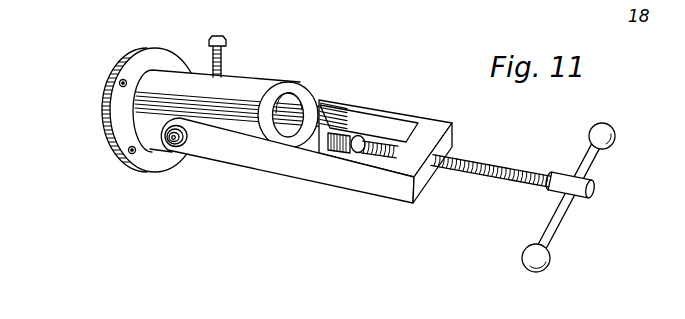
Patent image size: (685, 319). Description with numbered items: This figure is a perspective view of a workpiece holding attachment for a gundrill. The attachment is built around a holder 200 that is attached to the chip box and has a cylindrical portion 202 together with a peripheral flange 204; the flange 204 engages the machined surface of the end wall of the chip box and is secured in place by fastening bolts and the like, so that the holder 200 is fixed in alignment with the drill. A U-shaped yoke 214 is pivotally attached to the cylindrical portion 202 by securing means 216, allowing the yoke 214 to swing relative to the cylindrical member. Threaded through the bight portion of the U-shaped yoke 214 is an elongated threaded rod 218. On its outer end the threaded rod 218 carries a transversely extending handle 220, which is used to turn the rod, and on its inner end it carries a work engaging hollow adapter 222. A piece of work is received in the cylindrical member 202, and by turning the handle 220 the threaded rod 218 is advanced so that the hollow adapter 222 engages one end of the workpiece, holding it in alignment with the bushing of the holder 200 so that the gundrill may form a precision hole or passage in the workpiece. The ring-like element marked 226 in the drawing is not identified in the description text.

The holder 200 is at (367, 152).
The cylindrical portion 202 is at (237, 88).
The peripheral flange 204 is at (123, 138).
The U-shaped yoke 214 is at (349, 178).
The securing means 216 is at (183, 148).
The elongated threaded rod 218 is at (489, 172).
The transversely extending handle 220 is at (592, 165).
The work engaging hollow adapter 222 is at (342, 130).
The collar ring 226 is at (293, 102).